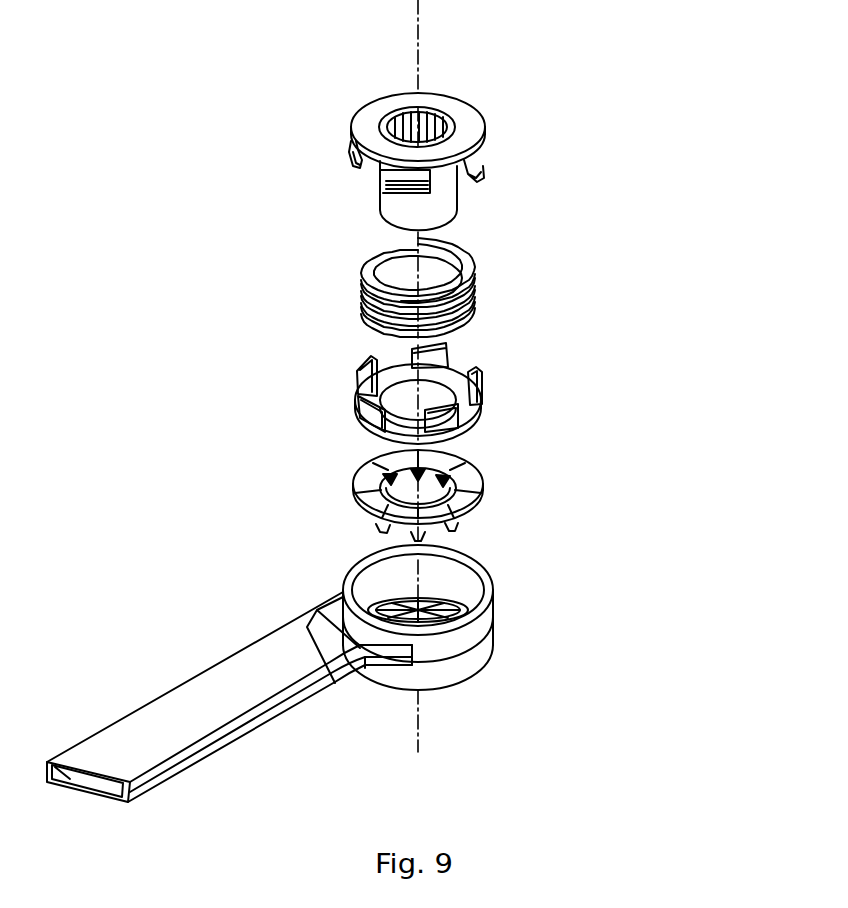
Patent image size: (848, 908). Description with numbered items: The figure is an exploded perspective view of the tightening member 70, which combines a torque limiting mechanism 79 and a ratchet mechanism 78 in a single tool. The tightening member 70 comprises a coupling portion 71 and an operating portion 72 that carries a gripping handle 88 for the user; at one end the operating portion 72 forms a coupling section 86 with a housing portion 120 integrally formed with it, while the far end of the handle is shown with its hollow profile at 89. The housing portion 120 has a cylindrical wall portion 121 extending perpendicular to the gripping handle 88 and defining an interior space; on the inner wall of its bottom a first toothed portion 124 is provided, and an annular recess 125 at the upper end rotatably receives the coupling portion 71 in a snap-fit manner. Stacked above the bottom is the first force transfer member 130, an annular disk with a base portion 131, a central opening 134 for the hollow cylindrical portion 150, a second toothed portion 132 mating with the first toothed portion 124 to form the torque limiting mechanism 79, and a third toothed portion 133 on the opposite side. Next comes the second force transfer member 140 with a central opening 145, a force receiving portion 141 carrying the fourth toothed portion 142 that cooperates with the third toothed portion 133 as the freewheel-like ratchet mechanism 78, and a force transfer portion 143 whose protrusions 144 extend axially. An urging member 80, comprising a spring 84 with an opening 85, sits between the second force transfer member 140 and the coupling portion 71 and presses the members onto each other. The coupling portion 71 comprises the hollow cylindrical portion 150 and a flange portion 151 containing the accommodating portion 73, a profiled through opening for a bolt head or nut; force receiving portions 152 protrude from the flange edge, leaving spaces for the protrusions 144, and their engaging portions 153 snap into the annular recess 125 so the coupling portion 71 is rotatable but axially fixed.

The tightening member 70 is at (113, 491).
The coupling portion 71 is at (437, 122).
The operating portion 72 is at (226, 734).
The accommodating portion 73 is at (413, 127).
The ratchet mechanism 78 is at (655, 402).
The torque limiting mechanism 79 is at (673, 527).
The urging member 80 is at (424, 274).
The spring 84 is at (364, 262).
The opening 85 is at (422, 289).
The coupling section 86 is at (362, 690).
The gripping handle 88 is at (213, 694).
The handle end opening 89 is at (95, 784).
The housing portion 120 is at (427, 617).
The cylindrical wall portion 121 is at (478, 664).
The first toothed portion 124 is at (441, 597).
The annular recess 125 is at (423, 577).
The first force transfer member 130 is at (436, 486).
The annular base portion 131 is at (366, 474).
The second toothed portion 132 is at (461, 536).
The third toothed portion 133 is at (367, 510).
The central opening 134 is at (430, 494).
The second force transfer member 140 is at (410, 378).
The force receiving portion 141 is at (469, 446).
The fourth toothed portion 142 is at (383, 438).
The force transfer portion 143 is at (370, 427).
The protrusions 144 is at (358, 364).
The central opening 145 is at (421, 393).
The hollow cylindrical portion 150 is at (397, 209).
The flange portion 151 is at (452, 105).
The force receiving portions 152 is at (489, 150).
The engaging portions 153 is at (476, 183).